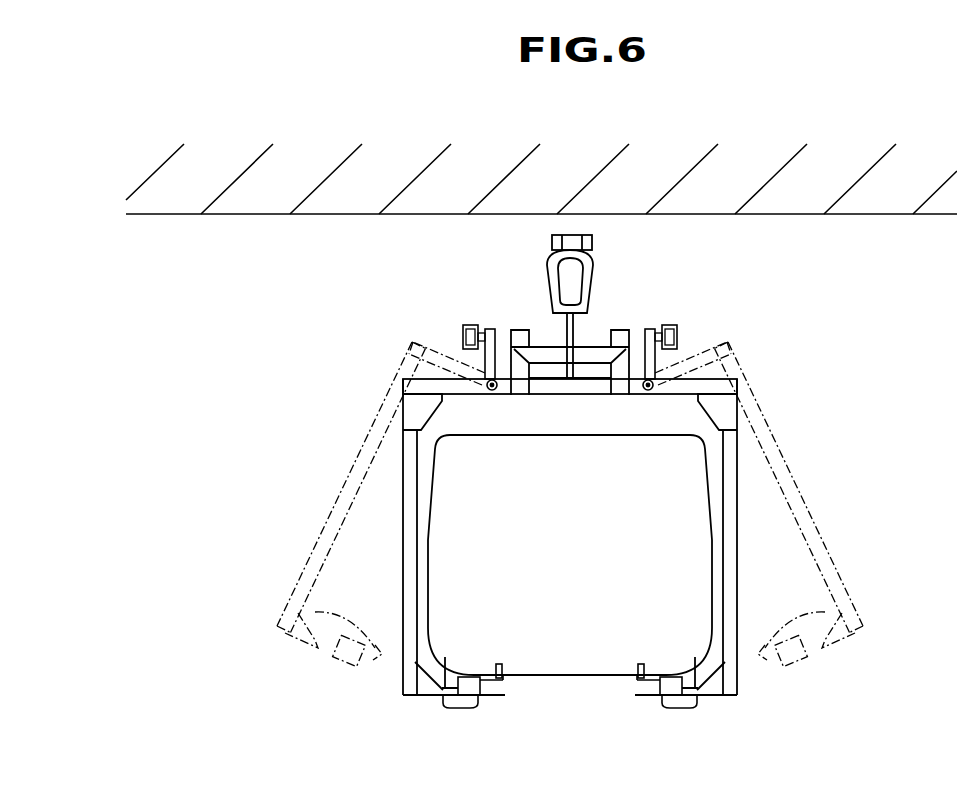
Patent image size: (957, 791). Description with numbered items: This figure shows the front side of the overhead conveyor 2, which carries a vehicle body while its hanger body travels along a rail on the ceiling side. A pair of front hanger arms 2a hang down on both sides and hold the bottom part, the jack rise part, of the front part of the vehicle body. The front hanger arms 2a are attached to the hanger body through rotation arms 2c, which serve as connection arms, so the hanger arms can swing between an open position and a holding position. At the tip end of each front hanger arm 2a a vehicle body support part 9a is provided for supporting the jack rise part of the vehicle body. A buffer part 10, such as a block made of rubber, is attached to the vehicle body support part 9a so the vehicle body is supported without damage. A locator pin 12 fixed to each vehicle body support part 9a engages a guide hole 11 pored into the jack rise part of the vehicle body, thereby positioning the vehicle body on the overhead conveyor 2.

The overhead conveyor 2 is at (598, 344).
The front hanger arm 2a is at (407, 630).
The rotation arm 2c is at (440, 377).
The vehicle body support part 9a is at (431, 702).
The buffer part 10 is at (340, 658).
The guide hole 11 is at (504, 663).
The locator pin 12 is at (308, 615).